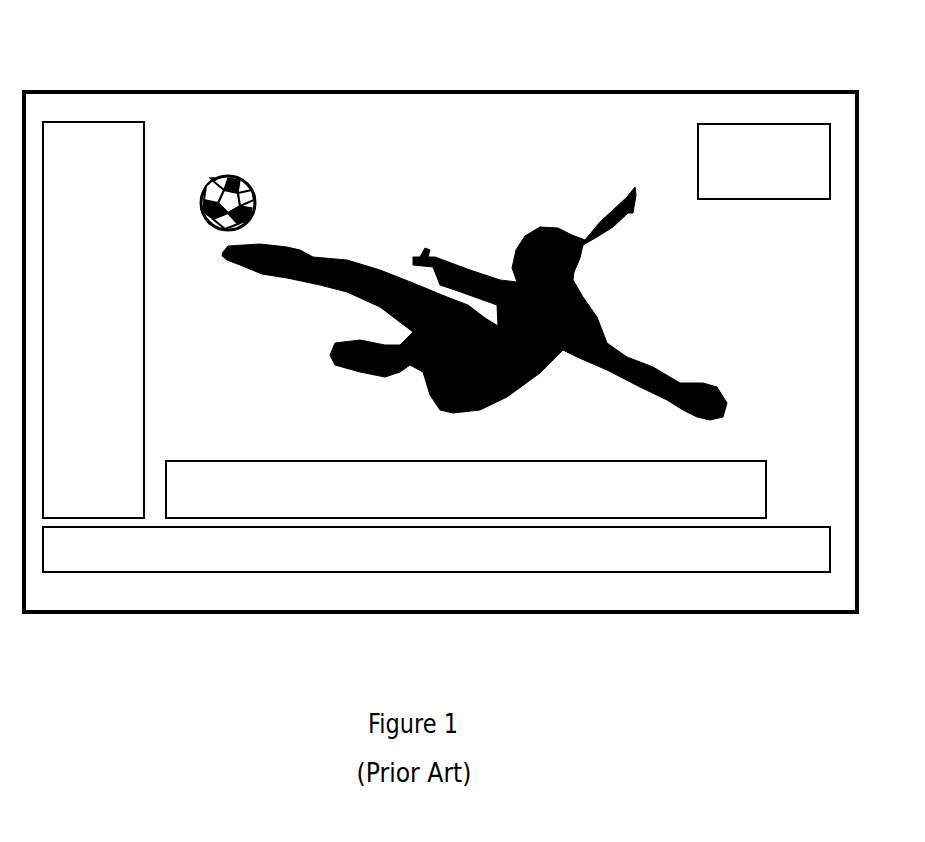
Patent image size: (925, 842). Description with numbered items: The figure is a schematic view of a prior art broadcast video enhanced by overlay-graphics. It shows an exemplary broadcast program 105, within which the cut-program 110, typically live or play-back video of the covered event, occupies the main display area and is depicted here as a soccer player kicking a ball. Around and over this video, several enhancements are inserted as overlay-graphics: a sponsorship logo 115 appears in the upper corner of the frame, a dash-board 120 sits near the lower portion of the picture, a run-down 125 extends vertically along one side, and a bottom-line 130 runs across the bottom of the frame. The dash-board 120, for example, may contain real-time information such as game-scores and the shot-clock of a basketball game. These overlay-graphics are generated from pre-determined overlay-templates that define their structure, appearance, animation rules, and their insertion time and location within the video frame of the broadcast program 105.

The broadcast program 105 is at (440, 313).
The cut-program 110 is at (502, 217).
The sponsorship logo 115 is at (764, 161).
The dash-board 120 is at (466, 489).
The run-down 125 is at (93, 320).
The bottom-line 130 is at (436, 549).